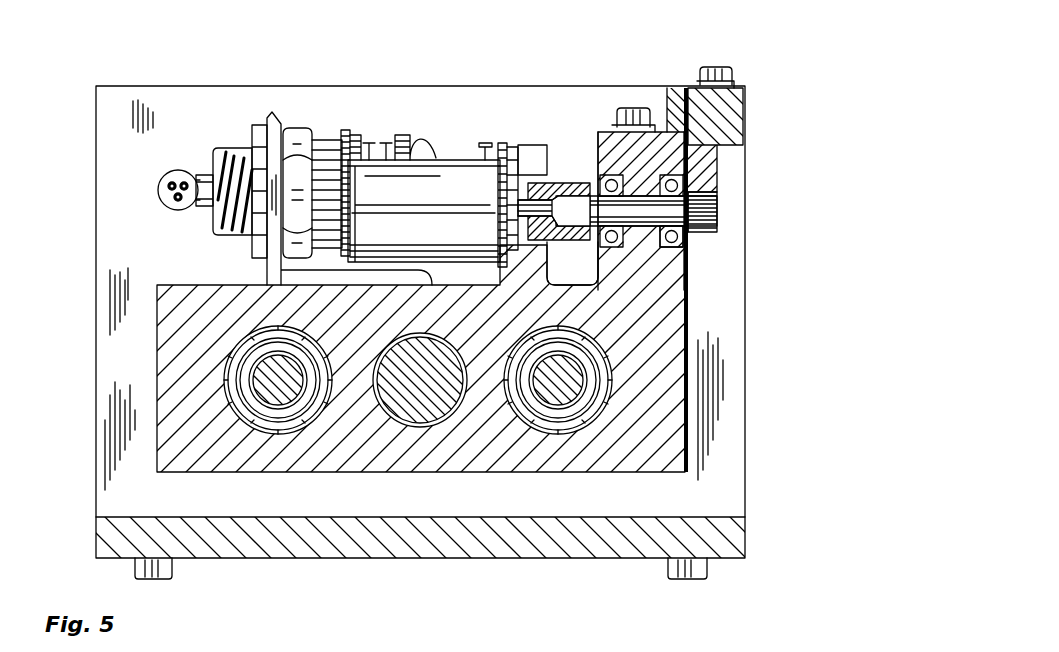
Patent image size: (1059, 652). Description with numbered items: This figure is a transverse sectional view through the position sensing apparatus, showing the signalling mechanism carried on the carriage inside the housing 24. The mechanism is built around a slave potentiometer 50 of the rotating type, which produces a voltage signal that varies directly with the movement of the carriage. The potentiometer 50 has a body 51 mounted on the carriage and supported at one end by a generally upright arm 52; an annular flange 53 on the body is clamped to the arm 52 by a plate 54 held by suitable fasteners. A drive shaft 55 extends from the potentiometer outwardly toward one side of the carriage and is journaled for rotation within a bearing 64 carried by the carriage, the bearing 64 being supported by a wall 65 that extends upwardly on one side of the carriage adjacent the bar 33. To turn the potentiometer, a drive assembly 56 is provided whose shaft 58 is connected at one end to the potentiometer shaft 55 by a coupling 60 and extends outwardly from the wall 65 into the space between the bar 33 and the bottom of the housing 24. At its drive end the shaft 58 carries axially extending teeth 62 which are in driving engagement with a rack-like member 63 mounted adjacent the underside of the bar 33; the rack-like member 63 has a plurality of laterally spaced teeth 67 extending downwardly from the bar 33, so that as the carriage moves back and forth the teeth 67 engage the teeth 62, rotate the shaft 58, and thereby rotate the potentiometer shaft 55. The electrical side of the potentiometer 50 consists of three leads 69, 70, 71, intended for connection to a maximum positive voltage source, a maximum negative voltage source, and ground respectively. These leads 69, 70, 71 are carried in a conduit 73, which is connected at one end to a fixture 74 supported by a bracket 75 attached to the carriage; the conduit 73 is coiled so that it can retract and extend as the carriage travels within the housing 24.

The housing 24 is at (746, 548).
The bar 33 is at (740, 105).
The slave potentiometer 50 is at (436, 157).
The body 51 is at (453, 172).
The arm 52 is at (553, 192).
The annular flange 53 is at (532, 155).
The plate 54 is at (500, 147).
The drive shaft 55 is at (738, 529).
The drive assembly 56 is at (598, 130).
The shaft 58 is at (660, 235).
The coupling 60 is at (572, 242).
The teeth 62 is at (718, 220).
The rack-like member 63 is at (668, 112).
The bearing 64 is at (157, 372).
The wall 65 is at (632, 110).
The teeth 67 is at (718, 200).
The lead 69 is at (178, 172).
The lead 70 is at (160, 190).
The lead 71 is at (178, 210).
The conduit 73 is at (195, 172).
The fixture 74 is at (320, 150).
The bracket 75 is at (276, 118).